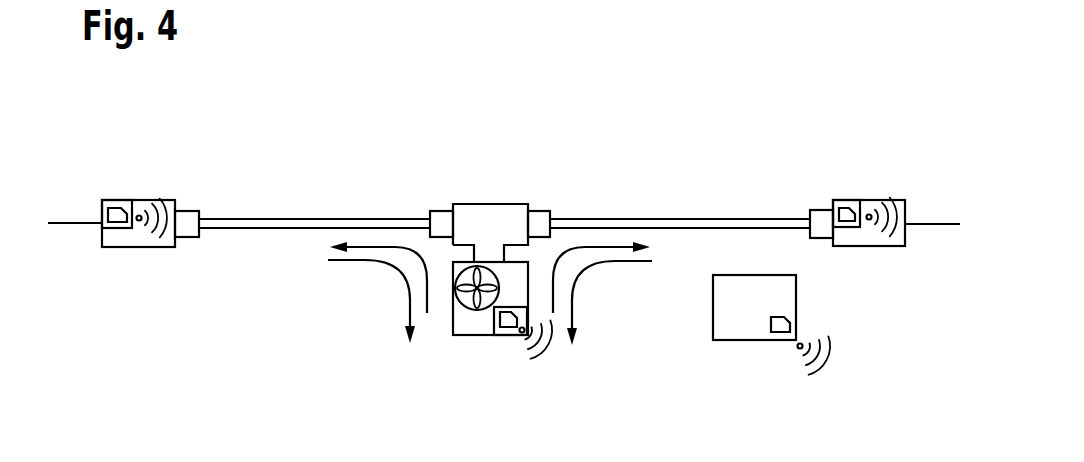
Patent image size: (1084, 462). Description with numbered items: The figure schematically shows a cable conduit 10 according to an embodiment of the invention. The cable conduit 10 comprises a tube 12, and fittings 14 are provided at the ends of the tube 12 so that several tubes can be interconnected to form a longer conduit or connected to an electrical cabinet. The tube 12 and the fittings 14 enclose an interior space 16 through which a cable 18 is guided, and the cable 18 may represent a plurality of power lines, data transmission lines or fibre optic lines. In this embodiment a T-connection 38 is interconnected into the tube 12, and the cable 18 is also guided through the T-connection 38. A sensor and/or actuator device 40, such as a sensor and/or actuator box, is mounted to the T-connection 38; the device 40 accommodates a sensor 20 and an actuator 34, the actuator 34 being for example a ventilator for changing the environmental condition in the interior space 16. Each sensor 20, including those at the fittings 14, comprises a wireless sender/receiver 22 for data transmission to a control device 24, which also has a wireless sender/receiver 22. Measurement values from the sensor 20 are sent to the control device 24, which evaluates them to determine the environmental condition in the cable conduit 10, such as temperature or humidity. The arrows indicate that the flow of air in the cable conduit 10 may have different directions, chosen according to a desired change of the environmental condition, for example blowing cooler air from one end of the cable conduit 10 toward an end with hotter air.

The cable conduit 10 is at (102, 122).
The tube 12 is at (290, 219).
The fitting 14 is at (163, 200).
The interior space 16 is at (668, 228).
The cable 18 is at (73, 223).
The sensor 20 is at (120, 228).
The wireless sender/receiver 22 is at (116, 200).
The control device 24 is at (738, 340).
The actuator 34 is at (463, 335).
The T-connection 38 is at (488, 204).
The sensor and/or actuator device 40 is at (478, 335).